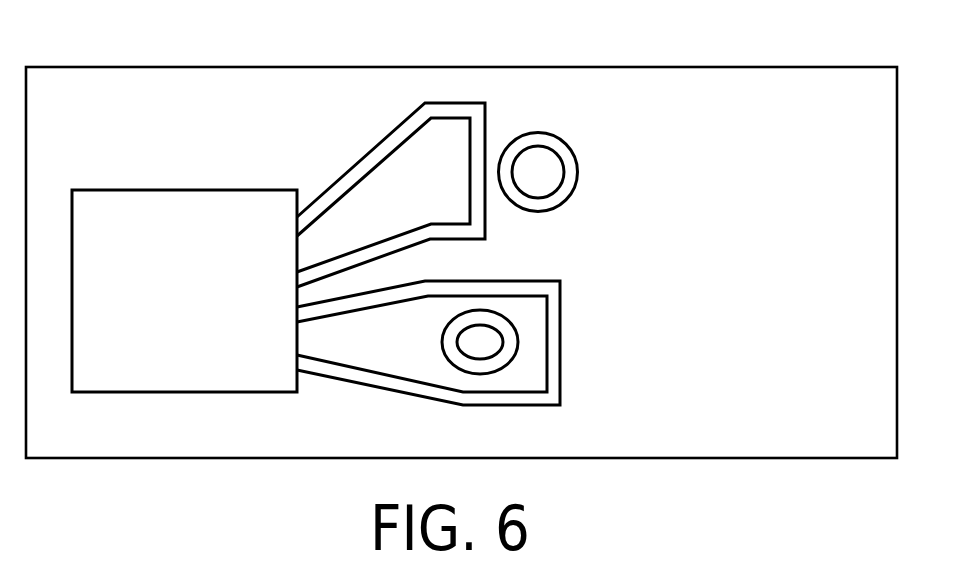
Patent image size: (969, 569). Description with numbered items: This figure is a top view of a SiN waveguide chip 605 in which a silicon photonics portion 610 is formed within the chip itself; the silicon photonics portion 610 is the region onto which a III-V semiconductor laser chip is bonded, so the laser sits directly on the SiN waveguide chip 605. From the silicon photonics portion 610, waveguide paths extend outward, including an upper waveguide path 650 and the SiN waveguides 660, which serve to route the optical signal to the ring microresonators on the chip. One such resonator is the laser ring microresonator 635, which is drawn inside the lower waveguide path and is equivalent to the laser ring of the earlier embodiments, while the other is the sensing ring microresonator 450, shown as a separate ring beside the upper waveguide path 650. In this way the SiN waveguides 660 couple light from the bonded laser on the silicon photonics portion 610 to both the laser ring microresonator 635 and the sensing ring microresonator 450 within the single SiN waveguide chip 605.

The SiN waveguide chip 605 is at (745, 67).
The silicon photonics portion 610 is at (196, 189).
The upper trace 650 is at (470, 183).
The SiN waveguides 660 is at (420, 379).
The laser ring microresonator 635 is at (515, 322).
The sensing ring microresonator 450 is at (578, 168).